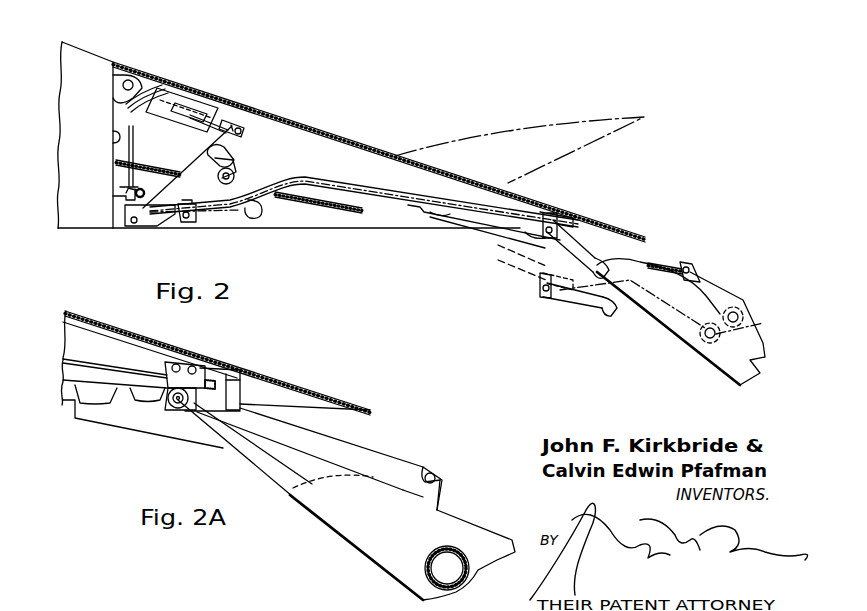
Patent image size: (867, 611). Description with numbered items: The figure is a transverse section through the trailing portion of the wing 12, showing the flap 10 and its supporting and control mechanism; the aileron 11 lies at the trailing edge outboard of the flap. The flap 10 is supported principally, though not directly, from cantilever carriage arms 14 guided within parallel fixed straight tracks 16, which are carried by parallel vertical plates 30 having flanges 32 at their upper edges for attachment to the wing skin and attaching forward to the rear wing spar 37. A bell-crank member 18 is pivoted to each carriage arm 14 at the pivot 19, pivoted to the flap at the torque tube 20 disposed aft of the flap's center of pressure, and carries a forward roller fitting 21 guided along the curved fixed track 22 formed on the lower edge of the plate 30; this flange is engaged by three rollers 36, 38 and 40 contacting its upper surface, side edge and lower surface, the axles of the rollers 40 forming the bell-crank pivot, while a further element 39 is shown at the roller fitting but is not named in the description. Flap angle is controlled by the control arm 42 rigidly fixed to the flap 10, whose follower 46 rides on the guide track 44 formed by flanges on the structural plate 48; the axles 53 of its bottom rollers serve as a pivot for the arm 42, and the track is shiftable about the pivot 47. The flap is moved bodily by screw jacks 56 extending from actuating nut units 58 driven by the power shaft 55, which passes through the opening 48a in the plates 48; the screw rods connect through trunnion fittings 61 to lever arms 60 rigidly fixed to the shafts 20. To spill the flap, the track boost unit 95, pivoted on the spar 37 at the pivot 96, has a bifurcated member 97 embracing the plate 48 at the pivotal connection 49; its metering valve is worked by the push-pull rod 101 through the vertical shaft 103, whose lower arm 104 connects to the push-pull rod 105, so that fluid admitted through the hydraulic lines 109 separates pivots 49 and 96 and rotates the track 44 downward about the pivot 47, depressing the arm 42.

In FIG. 2, the flap 10 is at (260, 220).
In FIG. 2A, the flap 10 is at (470, 520).
In FIG. 2, the aileron 11 is at (556, 132).
In FIG. 2, the wing 12 is at (78, 42).
In FIG. 2A, the wing 12 is at (290, 382).
In FIG. 2, the cantilever carriage arm 14 is at (445, 222).
In FIG. 2A, the cantilever carriage arm 14 is at (87, 418).
In FIG. 2A, the fixed straight track 16 is at (244, 408).
In FIG. 2A, the bell-crank member 18 is at (250, 468).
In FIG. 2A, the pivot 19 is at (437, 474).
In FIG. 2, the torque tube 20 is at (740, 306).
In FIG. 2A, the torque tube 20 is at (432, 550).
In FIG. 2A, the roller fitting 21 is at (200, 392).
In FIG. 2A, the curved fixed track 22 is at (96, 368).
In FIG. 2A, the vertical plate 30 is at (60, 339).
In FIG. 2A, the flange 32 is at (66, 318).
In FIG. 2A, the roller 36 is at (170, 367).
In FIG. 2, the rear wing spar 37 is at (118, 141).
In FIG. 2A, the roller 38 is at (215, 375).
In FIG. 2A, the pivot bolt 39 is at (178, 410).
In FIG. 2A, the roller 40 is at (226, 416).
In FIG. 2, the control arm 42 is at (228, 220).
In FIG. 2, the guide track 44 is at (343, 171).
In FIG. 2, the follower 46 is at (547, 212).
In FIG. 2, the pivot 47 is at (136, 228).
In FIG. 2, the structural plate 48 is at (196, 156).
In FIG. 2, the opening 48a is at (226, 152).
In FIG. 2, the pivotal connection 49 is at (243, 133).
In FIG. 2, the axle 53 is at (540, 270).
In FIG. 2, the power shaft 55 is at (235, 180).
In FIG. 2, the screw jack 56 is at (352, 212).
In FIG. 2, the actuating nut unit 58 is at (232, 166).
In FIG. 2, the lever arm 60 is at (703, 288).
In FIG. 2, the trunnion fitting 61 is at (688, 267).
In FIG. 2, the track boost unit 95 is at (189, 96).
In FIG. 2, the pivot 96 is at (130, 79).
In FIG. 2, the bifurcated member 97 is at (243, 124).
In FIG. 2, the push-pull rod 101 is at (184, 120).
In FIG. 2, the vertical shaft 103 is at (117, 171).
In FIG. 2, the arm 104 is at (117, 197).
In FIG. 2, the push-pull rod 105 is at (148, 197).
In FIG. 2, the hydraulic line 109 is at (112, 128).